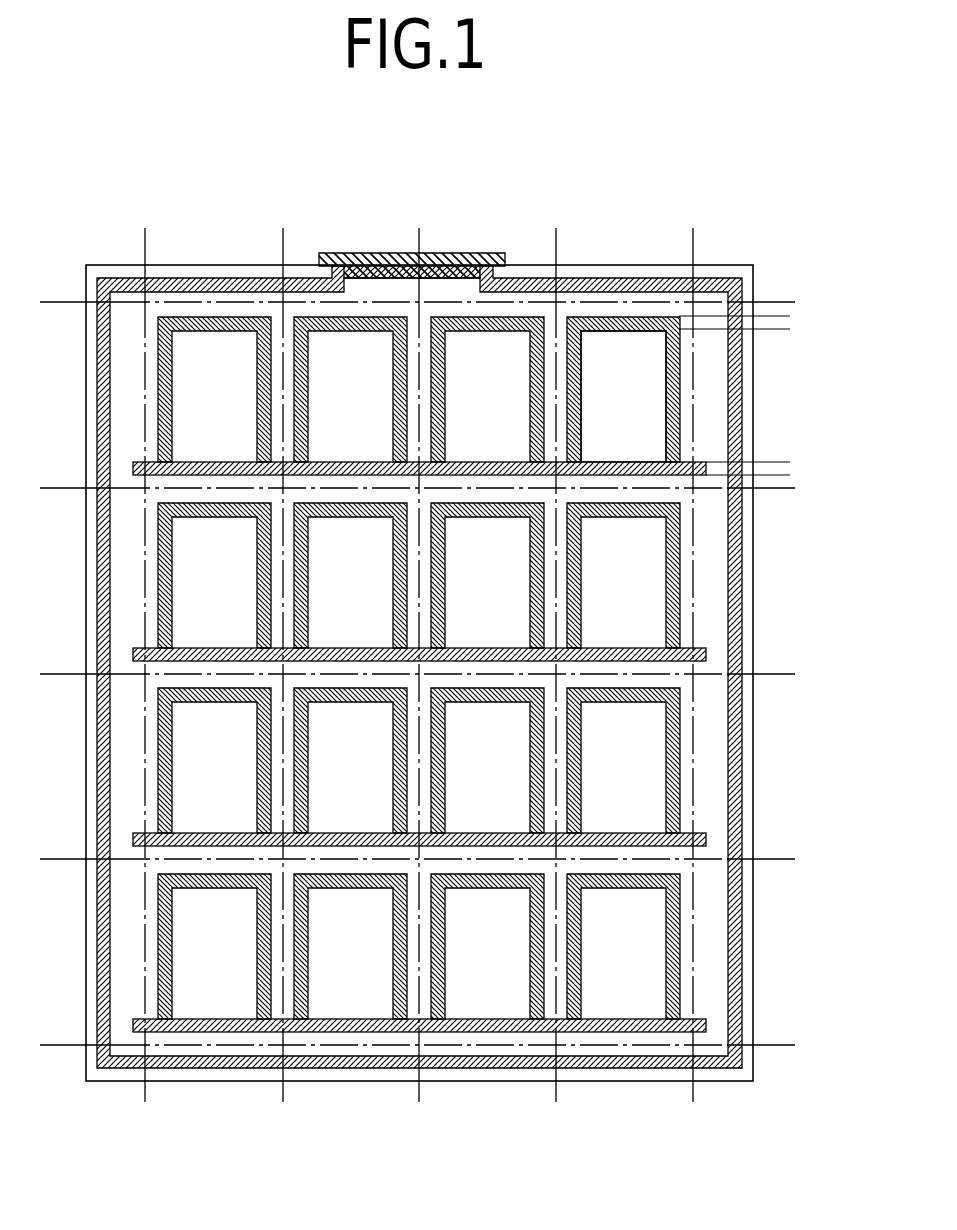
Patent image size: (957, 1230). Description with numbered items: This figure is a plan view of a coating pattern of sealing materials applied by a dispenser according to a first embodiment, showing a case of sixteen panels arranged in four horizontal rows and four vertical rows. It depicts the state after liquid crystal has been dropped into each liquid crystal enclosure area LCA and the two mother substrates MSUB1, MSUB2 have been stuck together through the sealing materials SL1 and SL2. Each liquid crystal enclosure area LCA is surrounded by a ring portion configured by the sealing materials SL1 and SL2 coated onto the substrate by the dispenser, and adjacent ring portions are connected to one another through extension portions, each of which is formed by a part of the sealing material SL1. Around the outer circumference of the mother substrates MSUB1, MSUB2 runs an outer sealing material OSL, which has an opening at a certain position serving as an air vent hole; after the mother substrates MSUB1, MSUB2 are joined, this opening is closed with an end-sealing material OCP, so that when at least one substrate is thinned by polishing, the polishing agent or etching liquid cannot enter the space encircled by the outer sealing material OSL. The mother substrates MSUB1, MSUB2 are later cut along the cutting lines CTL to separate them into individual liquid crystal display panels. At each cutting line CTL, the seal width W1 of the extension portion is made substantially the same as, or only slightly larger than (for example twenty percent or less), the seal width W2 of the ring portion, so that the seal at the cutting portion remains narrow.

The outer sealing material OSL is at (193, 280).
The end-sealing material OCP is at (450, 258).
The sealing material SL2 is at (593, 317).
The sealing material SL1 is at (615, 462).
The liquid crystal enclosure area LCA is at (648, 387).
The seal width of the ring portion W2 is at (778, 277).
The seal width of the extension portion W1 is at (778, 427).
The cutting line CTL is at (712, 857).
The mother substrate MSUB1 is at (419, 724).
The mother substrate MSUB2 is at (453, 1080).